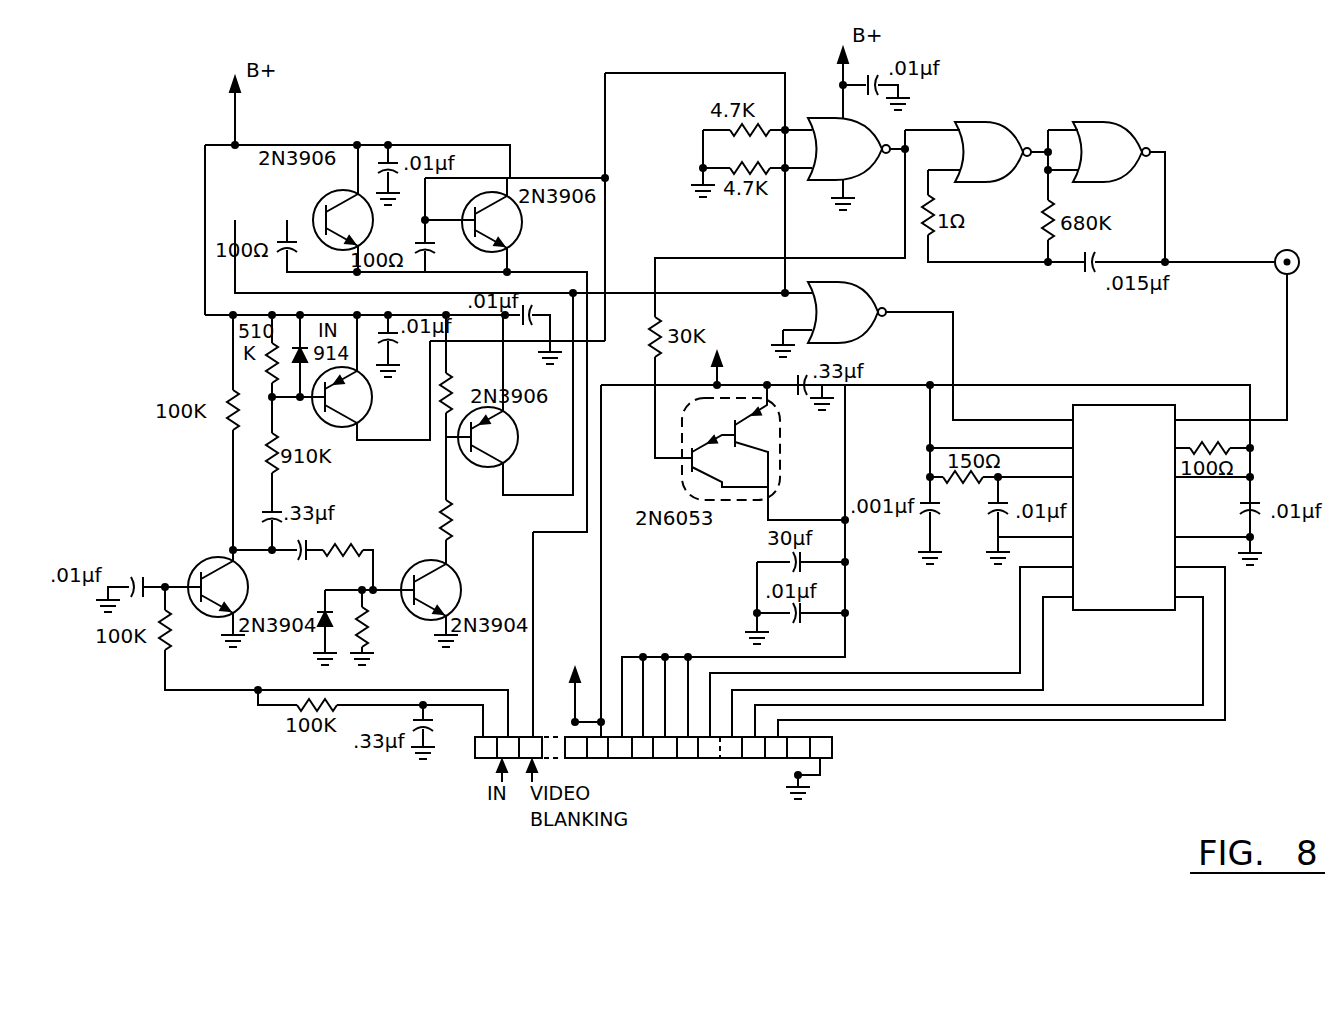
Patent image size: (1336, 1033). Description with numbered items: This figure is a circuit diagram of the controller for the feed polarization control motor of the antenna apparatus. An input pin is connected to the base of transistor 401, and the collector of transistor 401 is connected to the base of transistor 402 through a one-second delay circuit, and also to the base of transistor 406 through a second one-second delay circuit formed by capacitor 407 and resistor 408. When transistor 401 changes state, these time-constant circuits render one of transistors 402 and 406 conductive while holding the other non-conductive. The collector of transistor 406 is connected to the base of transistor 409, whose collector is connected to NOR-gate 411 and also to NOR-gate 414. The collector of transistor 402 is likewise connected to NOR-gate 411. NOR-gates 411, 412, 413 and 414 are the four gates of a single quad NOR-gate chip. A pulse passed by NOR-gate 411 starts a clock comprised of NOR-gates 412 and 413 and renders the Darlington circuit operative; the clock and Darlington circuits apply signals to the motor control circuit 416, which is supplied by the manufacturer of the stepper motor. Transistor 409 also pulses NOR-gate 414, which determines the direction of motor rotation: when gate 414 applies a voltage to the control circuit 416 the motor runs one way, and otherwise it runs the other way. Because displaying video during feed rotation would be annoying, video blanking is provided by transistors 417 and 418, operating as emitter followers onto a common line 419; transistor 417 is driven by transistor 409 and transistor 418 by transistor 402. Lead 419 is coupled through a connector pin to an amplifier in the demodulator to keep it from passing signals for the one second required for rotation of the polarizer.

The transistor 401 is at (197, 563).
The transistor 402 is at (375, 408).
The transistor 406 is at (452, 578).
The capacitor 407 is at (300, 547).
The resistor 408 is at (356, 543).
The transistor 409 is at (503, 462).
The NOR-gate 411 is at (852, 182).
The NOR-gate 412 is at (997, 122).
The NOR-gate 413 is at (1115, 122).
The NOR-gate 414 is at (870, 284).
The motor control circuit 416 is at (1126, 612).
The transistor 417 is at (375, 237).
The transistor 418 is at (484, 253).
The common line 419 is at (534, 574).